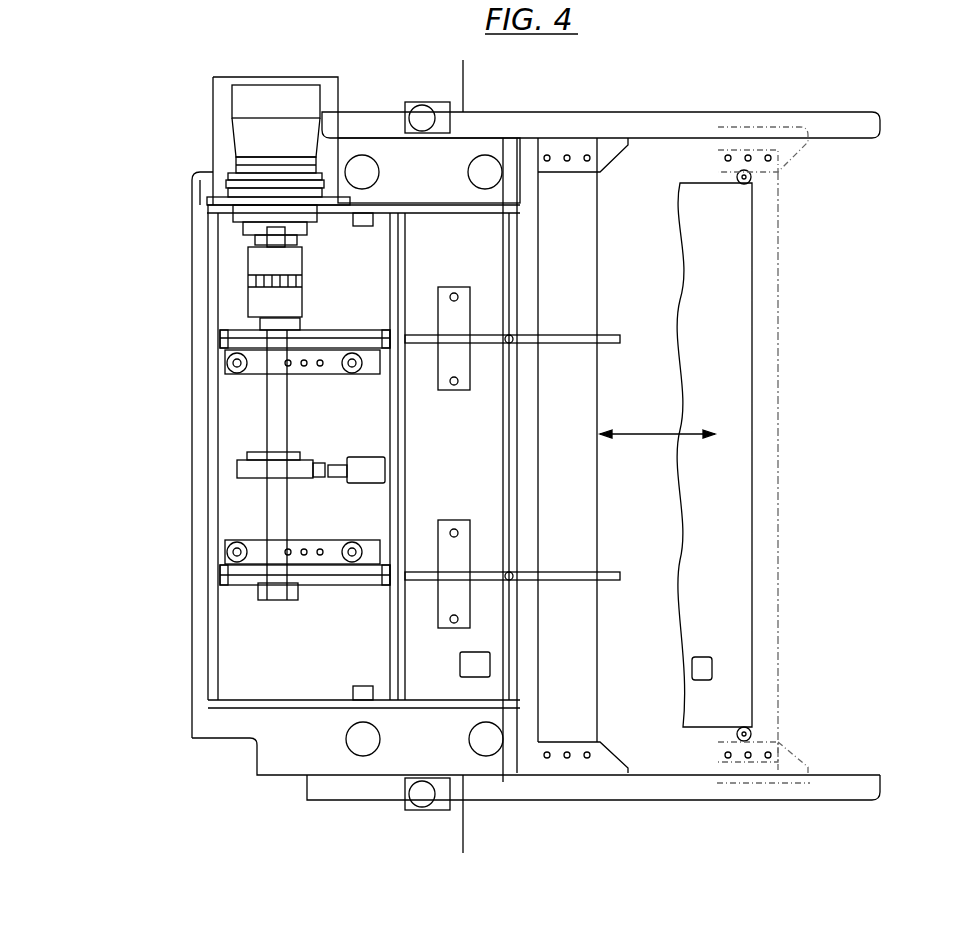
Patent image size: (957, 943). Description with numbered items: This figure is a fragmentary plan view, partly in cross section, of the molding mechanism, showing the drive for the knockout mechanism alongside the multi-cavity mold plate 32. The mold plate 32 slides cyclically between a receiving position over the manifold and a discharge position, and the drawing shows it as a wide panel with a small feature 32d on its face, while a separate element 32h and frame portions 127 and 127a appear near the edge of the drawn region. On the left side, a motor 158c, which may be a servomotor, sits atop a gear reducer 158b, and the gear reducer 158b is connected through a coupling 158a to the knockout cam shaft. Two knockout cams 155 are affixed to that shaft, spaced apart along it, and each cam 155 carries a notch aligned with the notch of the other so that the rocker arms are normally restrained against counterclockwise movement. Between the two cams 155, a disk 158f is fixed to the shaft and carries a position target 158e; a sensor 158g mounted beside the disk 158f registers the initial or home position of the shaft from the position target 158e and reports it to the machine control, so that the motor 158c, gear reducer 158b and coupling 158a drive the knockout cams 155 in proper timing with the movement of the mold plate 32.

The motor 158c is at (232, 110).
The gear reducer 158b is at (232, 178).
The coupling 158a is at (250, 265).
The knockout cam 155 is at (303, 332).
The disk 158f is at (250, 478).
The position target 158e is at (313, 462).
The sensor 158g is at (368, 484).
The mold plate 32 is at (752, 285).
The panel mount 32d is at (705, 657).
The panel hole 32h is at (490, 660).
The frame member 127 is at (778, 218).
The frame bracket 127a is at (800, 155).